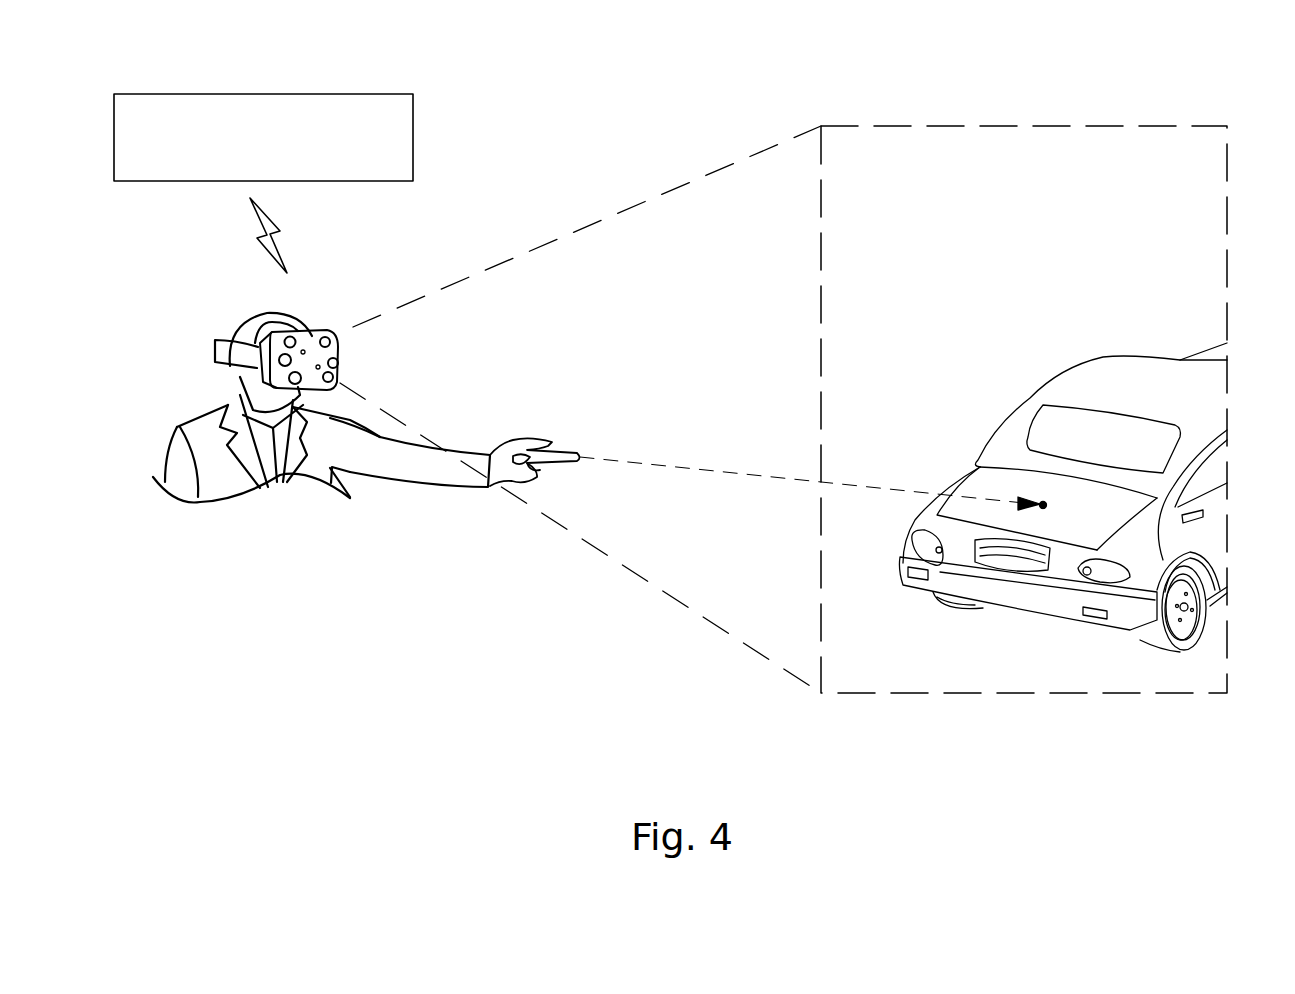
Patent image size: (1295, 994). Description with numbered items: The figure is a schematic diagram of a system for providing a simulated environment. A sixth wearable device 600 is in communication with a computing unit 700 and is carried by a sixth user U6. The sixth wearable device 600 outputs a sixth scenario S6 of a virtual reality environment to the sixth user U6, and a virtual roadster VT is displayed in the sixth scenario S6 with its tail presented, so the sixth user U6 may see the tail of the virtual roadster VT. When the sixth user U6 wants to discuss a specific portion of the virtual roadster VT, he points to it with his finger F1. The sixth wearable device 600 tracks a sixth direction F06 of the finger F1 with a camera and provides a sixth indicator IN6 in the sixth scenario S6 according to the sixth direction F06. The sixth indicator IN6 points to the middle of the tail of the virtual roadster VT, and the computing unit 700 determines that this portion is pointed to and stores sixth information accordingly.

The computing unit 700 is at (240, 167).
The sixth wearable device 600 is at (315, 340).
The sixth user U6 is at (200, 412).
The finger F1 is at (563, 445).
The sixth direction F06 is at (662, 467).
The sixth scenario S6 is at (1048, 126).
The virtual roadster VT is at (1103, 375).
The sixth indicator IN6 is at (1041, 503).